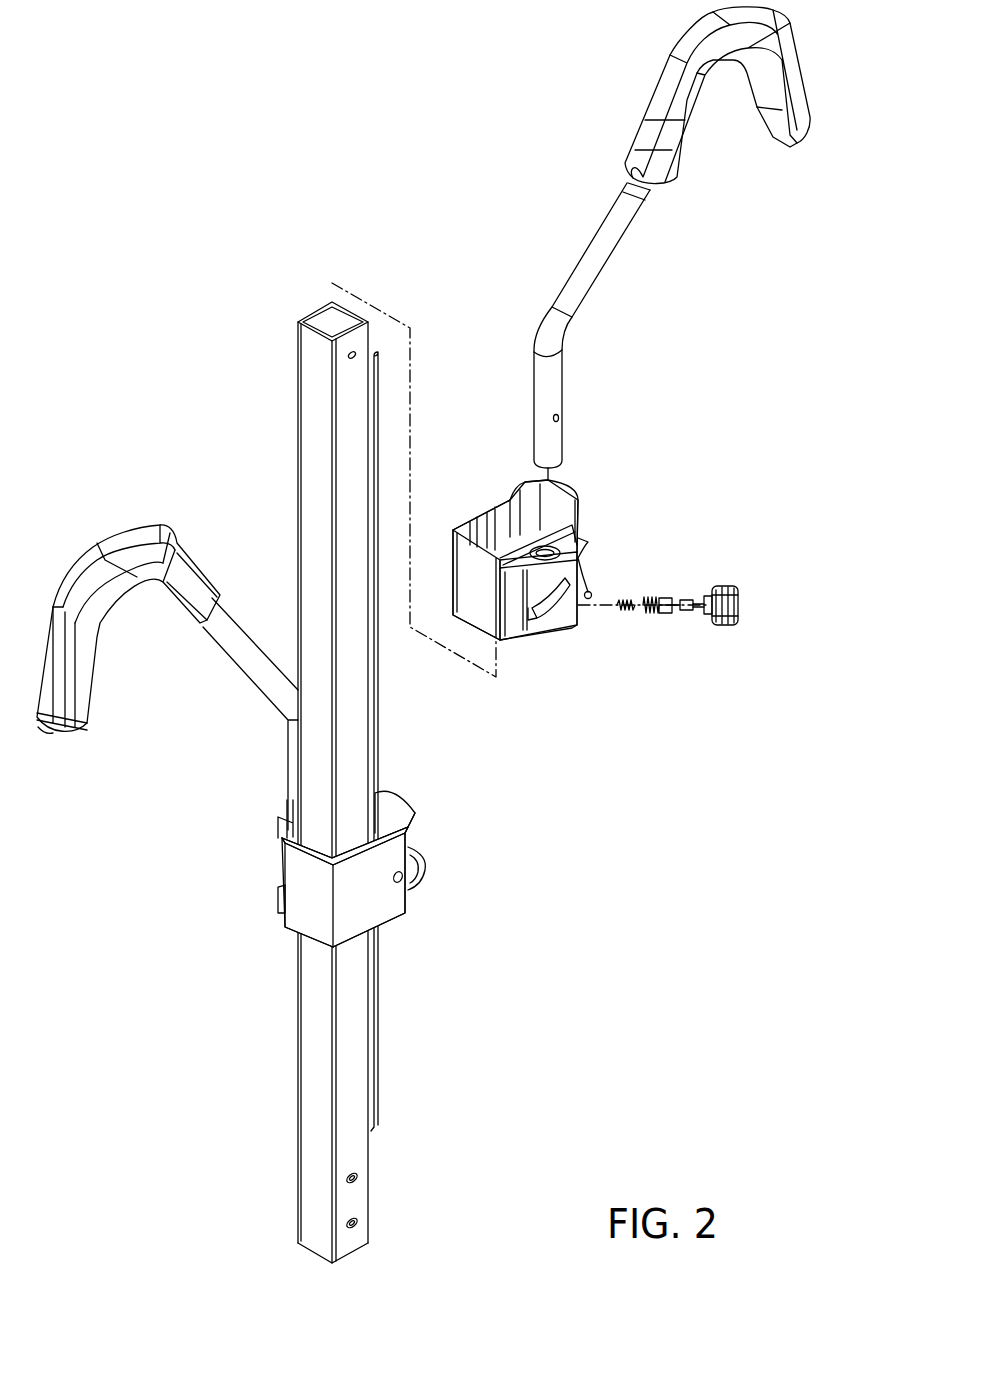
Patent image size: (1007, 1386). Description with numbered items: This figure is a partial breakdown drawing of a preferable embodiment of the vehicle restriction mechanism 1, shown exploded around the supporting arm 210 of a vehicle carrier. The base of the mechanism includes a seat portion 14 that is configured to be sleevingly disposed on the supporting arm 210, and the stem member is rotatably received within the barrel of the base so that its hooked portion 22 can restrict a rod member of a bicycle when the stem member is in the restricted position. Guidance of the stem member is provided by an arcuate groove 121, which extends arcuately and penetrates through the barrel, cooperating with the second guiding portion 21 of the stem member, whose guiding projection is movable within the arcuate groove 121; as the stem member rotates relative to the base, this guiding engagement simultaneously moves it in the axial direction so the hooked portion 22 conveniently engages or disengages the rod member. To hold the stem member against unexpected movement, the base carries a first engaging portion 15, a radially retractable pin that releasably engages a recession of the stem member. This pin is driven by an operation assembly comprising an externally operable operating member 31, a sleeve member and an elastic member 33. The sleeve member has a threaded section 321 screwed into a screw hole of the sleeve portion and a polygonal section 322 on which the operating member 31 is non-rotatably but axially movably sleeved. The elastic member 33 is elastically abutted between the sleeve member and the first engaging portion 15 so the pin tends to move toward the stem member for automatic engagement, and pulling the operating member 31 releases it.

The vehicle restriction mechanism 1 is at (245, 922).
The supporting arm 210 is at (310, 1088).
The hooked portion 22 is at (668, 88).
The seat portion 14 is at (487, 500).
The arcuate groove 121 is at (555, 628).
The second guiding portion 21 is at (589, 591).
The elastic member 33 is at (628, 600).
The threaded section 321 is at (648, 616).
The polygonal section 322 is at (665, 616).
The first engaging portion 15 is at (688, 598).
The operating member 31 is at (722, 626).